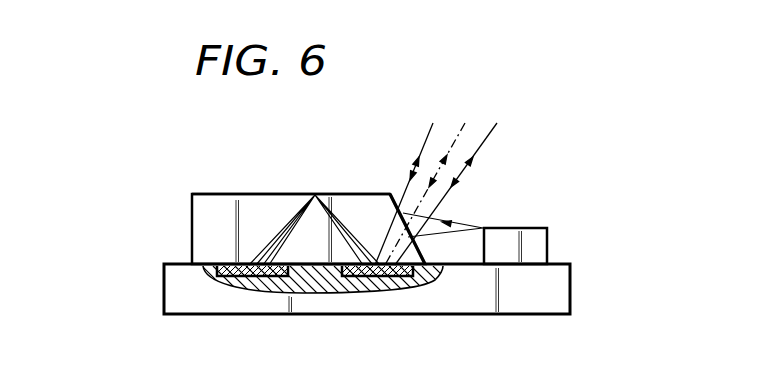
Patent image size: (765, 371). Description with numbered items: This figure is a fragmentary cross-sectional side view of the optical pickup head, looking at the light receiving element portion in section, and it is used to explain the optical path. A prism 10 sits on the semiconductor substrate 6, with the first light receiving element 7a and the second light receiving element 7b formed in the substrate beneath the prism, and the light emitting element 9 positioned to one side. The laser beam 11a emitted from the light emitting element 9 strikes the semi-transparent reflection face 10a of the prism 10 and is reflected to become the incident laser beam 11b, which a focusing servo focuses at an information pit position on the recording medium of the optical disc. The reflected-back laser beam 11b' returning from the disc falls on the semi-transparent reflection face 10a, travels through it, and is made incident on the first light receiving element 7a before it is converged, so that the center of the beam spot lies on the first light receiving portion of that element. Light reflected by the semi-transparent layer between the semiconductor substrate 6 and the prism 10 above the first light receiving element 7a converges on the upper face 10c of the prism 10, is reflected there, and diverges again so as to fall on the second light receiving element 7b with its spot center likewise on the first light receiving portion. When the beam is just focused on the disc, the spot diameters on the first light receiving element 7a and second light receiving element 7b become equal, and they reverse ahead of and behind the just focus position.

The semiconductor substrate 6 is at (567, 289).
The first light receiving element 7a is at (375, 277).
The second light receiving element 7b is at (257, 277).
The light emitting element 9 is at (535, 243).
The prism 10 is at (238, 194).
The semi-transparent reflection face 10a is at (397, 207).
The upper face of the prism 10c is at (217, 196).
The laser beam 11a is at (445, 225).
The incident laser beam 11b is at (481, 194).
The reflected-back laser beam 11b' is at (396, 180).